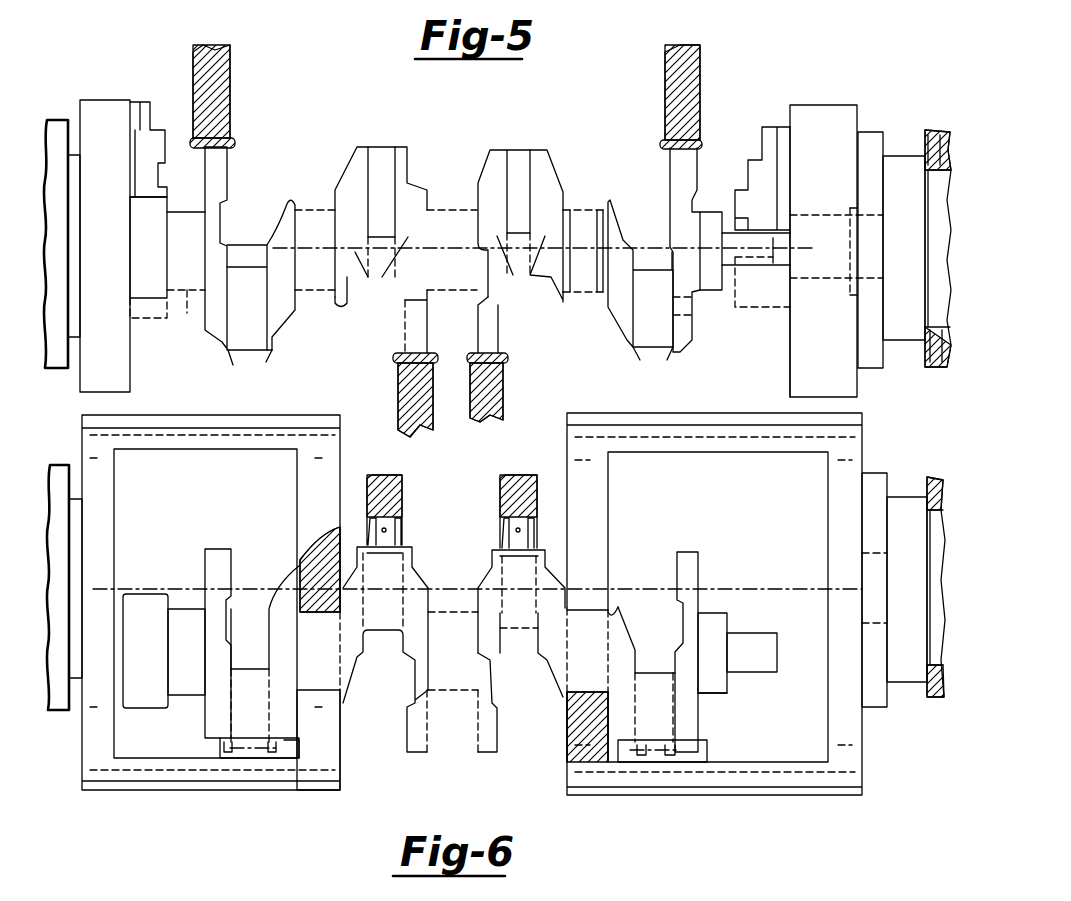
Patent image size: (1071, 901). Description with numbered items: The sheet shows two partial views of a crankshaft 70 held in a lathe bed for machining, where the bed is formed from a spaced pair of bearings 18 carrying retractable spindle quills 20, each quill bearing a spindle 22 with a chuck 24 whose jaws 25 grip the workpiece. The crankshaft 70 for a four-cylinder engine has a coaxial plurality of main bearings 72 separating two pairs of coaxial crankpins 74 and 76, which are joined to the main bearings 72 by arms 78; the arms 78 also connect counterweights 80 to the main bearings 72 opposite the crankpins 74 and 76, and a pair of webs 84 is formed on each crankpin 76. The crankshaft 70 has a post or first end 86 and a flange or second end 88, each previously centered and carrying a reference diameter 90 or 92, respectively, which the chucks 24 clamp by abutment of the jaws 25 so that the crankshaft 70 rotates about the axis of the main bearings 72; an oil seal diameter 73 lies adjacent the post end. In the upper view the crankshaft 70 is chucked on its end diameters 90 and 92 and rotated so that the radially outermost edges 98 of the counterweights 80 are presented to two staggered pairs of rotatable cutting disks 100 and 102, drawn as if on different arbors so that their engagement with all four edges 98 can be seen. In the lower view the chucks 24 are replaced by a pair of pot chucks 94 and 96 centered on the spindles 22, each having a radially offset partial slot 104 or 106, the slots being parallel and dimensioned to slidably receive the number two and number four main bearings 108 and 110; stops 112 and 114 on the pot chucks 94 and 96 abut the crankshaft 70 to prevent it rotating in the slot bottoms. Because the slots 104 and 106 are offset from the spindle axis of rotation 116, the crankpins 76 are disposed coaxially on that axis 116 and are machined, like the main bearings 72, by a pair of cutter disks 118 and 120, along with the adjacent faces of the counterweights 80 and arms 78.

In FIG. 5, the bearing 18 is at (930, 135).
In FIG. 6, the bearing 18 is at (932, 697).
In FIG. 5, the spindle quill 20 is at (62, 120).
In FIG. 6, the spindle quill 20 is at (55, 465).
In FIG. 5, the spindle 22 is at (74, 158).
In FIG. 6, the spindle 22 is at (75, 499).
In FIG. 5, the chuck 24 is at (108, 100).
In FIG. 5, the jaw 25 is at (145, 150).
In FIG. 5, the crankshaft 70 is at (378, 334).
In FIG. 6, the crankshaft 70 is at (345, 710).
In FIG. 5, the main bearing 72 is at (187, 293).
In FIG. 6, the main bearing 72 is at (183, 695).
In FIG. 5, the oil seal diameter 73 is at (712, 290).
In FIG. 6, the oil seal diameter 73 is at (712, 693).
In FIG. 5, the crankpin 74 is at (255, 325).
In FIG. 6, the crankpin 74 is at (262, 758).
In FIG. 5, the crankpin 76 is at (375, 147).
In FIG. 6, the crankpin 76 is at (395, 565).
In FIG. 5, the arm 78 is at (268, 243).
In FIG. 6, the arm 78 is at (228, 665).
In FIG. 5, the counterweight 80 is at (222, 178).
In FIG. 6, the counterweight 80 is at (228, 549).
In FIG. 5, the web 84 is at (250, 350).
In FIG. 5, the first end 86 is at (790, 300).
In FIG. 5, the second end 88 is at (128, 283).
In FIG. 5, the reference diameter 90 is at (773, 262).
In FIG. 6, the reference diameter 90 is at (750, 672).
In FIG. 5, the reference diameter 92 is at (148, 300).
In FIG. 6, the reference diameter 92 is at (130, 708).
In FIG. 6, the pot chuck 94 is at (318, 468).
In FIG. 6, the pot chuck 96 is at (600, 493).
In FIG. 5, the radially outermost edge 98 is at (225, 152).
In FIG. 5, the cutting disk 100 is at (470, 400).
In FIG. 5, the cutting disk 102 is at (232, 80).
In FIG. 6, the partial slot 104 is at (300, 590).
In FIG. 6, the partial slot 106 is at (618, 607).
In FIG. 6, the main bearing 108 is at (340, 665).
In FIG. 6, the main bearing 110 is at (560, 665).
In FIG. 6, the stop 112 is at (295, 760).
In FIG. 6, the stop 114 is at (707, 762).
In FIG. 6, the axis of rotation 116 is at (727, 613).
In FIG. 6, the cutter disk 118 is at (402, 483).
In FIG. 6, the cutter disk 120 is at (500, 515).